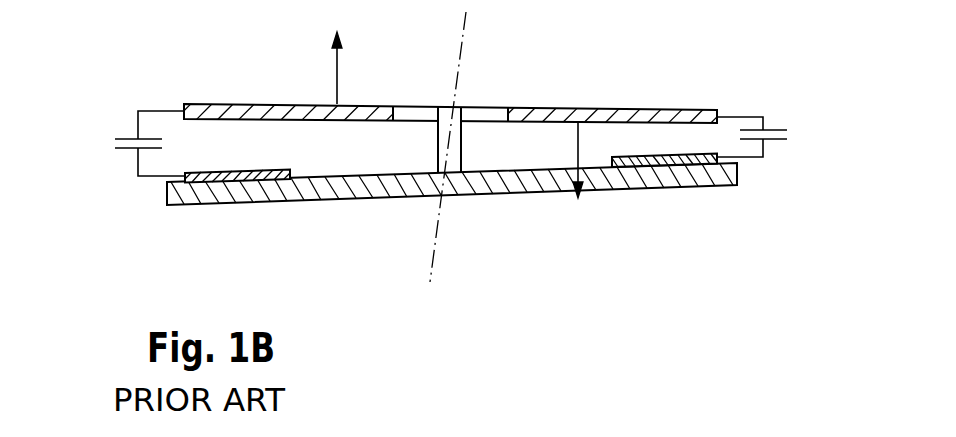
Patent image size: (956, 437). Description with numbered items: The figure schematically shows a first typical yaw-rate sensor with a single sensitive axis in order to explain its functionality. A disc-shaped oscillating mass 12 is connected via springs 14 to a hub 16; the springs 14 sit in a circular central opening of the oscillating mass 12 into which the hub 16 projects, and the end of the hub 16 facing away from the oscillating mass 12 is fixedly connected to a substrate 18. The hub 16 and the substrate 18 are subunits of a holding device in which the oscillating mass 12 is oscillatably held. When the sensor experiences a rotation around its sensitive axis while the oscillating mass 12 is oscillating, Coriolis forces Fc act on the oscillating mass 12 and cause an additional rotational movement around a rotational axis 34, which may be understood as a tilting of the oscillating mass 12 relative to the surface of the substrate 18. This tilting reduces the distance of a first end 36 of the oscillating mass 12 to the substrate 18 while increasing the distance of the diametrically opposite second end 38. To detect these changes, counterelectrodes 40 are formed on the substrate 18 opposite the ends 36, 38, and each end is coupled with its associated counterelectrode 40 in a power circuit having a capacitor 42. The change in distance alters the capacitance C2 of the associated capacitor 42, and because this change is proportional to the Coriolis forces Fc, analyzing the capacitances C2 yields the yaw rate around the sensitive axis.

The oscillating mass 12 is at (530, 107).
The springs 14 is at (491, 107).
The hub 16 is at (452, 152).
The substrate 18 is at (702, 174).
The rotational axis 34 is at (437, 233).
The first end 36 is at (707, 110).
The second end 38 is at (188, 104).
The counterelectrodes 40 is at (228, 182).
The capacitor 42 is at (128, 138).
The capacitance C2 is at (450, 142).
The Coriolis forces Fc is at (334, 74).